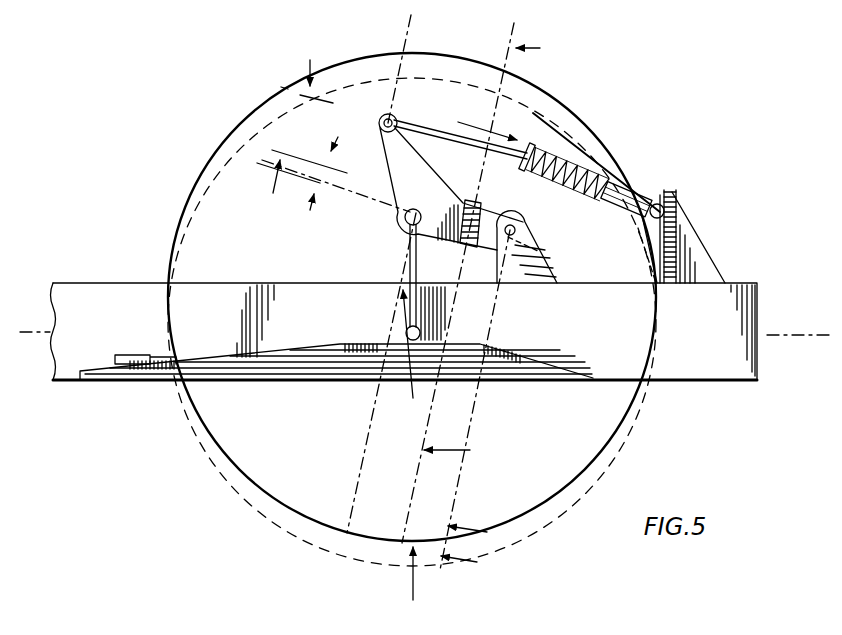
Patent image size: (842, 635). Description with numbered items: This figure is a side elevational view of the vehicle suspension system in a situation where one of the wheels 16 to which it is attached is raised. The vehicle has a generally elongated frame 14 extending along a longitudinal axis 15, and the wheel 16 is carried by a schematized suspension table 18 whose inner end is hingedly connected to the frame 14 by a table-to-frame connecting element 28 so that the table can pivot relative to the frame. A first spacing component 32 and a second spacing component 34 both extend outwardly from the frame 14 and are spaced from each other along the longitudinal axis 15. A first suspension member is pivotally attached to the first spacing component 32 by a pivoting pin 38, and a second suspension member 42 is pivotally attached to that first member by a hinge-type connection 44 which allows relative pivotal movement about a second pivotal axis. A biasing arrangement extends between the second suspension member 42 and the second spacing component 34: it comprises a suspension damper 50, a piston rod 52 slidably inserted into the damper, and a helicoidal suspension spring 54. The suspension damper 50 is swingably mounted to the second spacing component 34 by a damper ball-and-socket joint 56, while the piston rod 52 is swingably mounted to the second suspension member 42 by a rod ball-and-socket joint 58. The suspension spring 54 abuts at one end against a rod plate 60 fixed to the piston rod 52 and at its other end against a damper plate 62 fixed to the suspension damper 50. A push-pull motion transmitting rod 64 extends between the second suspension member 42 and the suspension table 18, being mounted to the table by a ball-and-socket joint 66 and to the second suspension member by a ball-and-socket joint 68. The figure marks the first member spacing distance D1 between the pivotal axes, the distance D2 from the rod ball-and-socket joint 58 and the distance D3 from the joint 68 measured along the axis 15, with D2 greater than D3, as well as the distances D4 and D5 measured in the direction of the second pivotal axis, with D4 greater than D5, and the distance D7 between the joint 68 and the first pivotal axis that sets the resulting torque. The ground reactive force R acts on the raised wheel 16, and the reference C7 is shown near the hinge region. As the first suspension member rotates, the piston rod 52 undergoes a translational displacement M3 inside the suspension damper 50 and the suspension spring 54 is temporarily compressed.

The frame 14 is at (745, 305).
The longitudinal axis 15 is at (813, 342).
The lateral wheel 16 is at (475, 62).
The suspension table 18 is at (518, 380).
The table-to-frame connecting element 28 is at (125, 355).
The first spacing component 32 is at (550, 262).
The second spacing component 34 is at (677, 255).
The pivoting pin 38 is at (522, 230).
The second suspension member 42 is at (388, 142).
The hinge-type connection 44 is at (409, 256).
The suspension damper 50 is at (658, 203).
The piston rod 52 is at (437, 138).
The helicoidal suspension spring 54 is at (592, 155).
The damper ball-and-socket joint 56 is at (680, 202).
The rod ball-and-socket joint 58 is at (395, 112).
The rod plate 60 is at (562, 150).
The damper plate 62 is at (612, 183).
The motion transmitting rod 64 is at (422, 293).
The ball-and-socket joint 66 is at (425, 334).
The ball-and-socket joint 68 is at (404, 214).
The first member spacing distance D1 is at (407, 512).
The distance D2 is at (409, 24).
The first transmitting rod joint spacing distance D3 is at (367, 430).
The distance D4 is at (315, 65).
The distance D5 is at (302, 207).
The distance D7 is at (347, 533).
The center C7 is at (400, 318).
The translational displacement M3 is at (520, 128).
The ground reactive force R is at (416, 585).